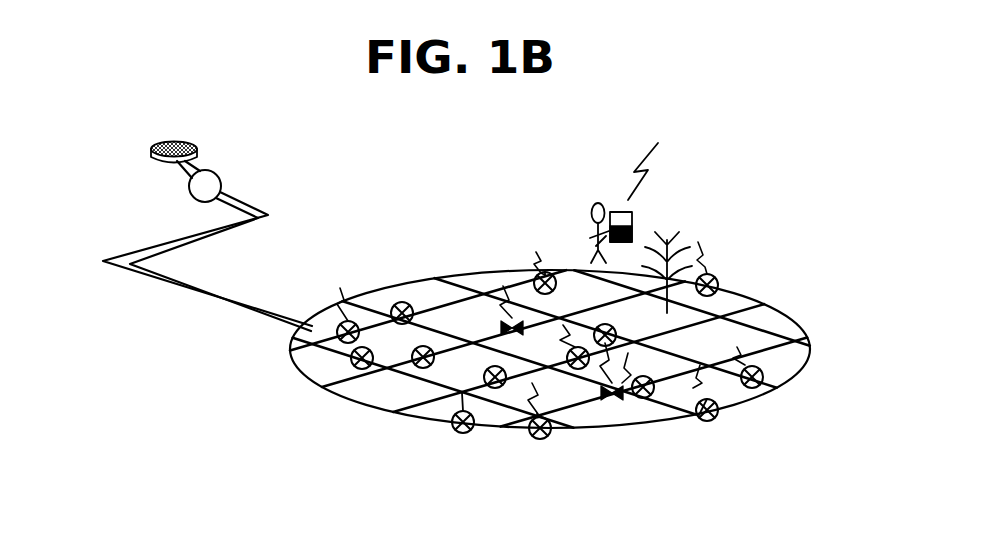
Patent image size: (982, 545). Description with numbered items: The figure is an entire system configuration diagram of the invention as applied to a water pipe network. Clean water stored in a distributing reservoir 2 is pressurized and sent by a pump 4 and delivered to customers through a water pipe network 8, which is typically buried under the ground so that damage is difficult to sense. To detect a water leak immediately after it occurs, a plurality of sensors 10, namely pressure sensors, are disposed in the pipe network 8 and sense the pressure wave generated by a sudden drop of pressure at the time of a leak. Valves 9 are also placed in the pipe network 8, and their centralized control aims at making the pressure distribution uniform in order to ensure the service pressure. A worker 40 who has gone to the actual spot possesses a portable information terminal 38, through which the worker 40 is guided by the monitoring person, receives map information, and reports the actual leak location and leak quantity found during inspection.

The distributing reservoir 2 is at (187, 142).
The pump 4 is at (222, 181).
The water pipe network 8 is at (435, 292).
The valve 9 is at (616, 401).
The sensor 10 is at (540, 440).
The portable information terminal 38 is at (633, 220).
The worker 40 is at (601, 200).